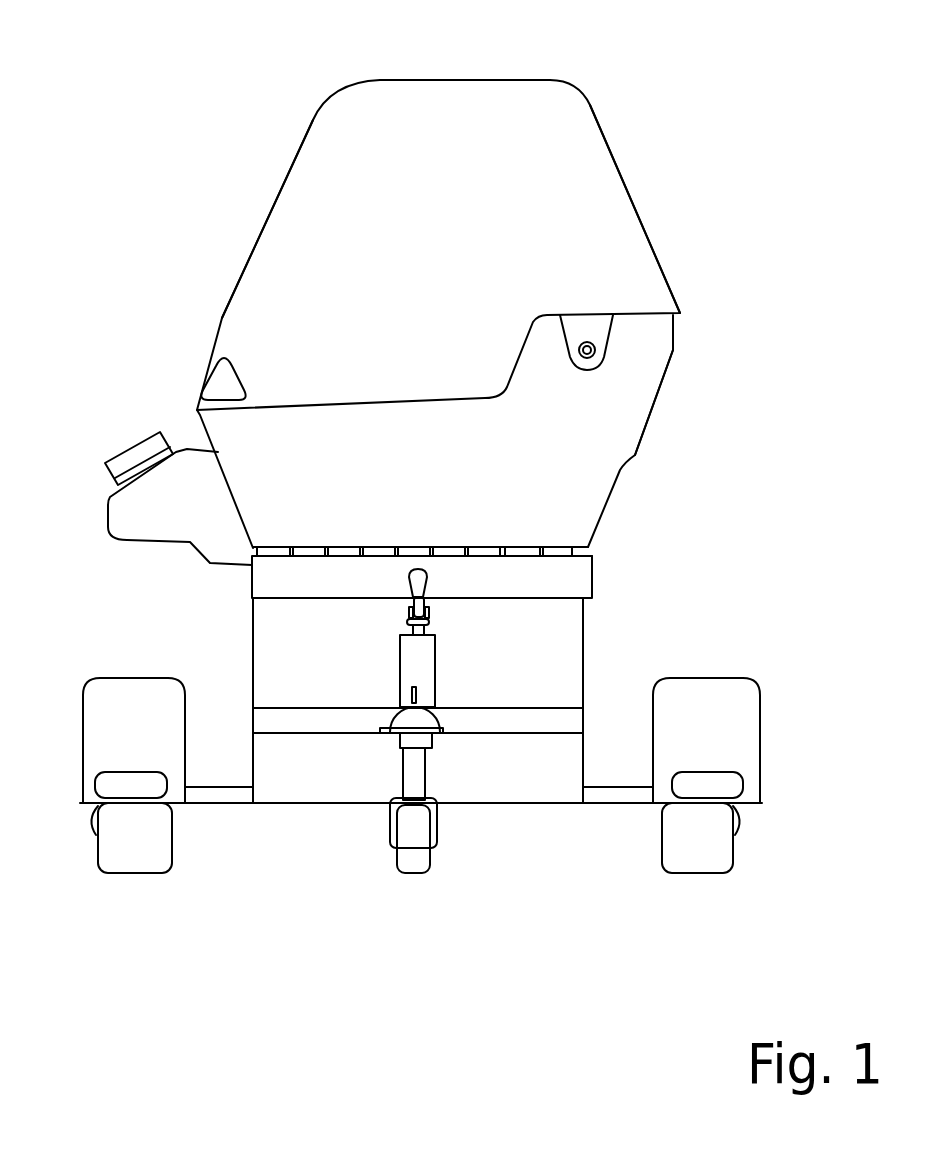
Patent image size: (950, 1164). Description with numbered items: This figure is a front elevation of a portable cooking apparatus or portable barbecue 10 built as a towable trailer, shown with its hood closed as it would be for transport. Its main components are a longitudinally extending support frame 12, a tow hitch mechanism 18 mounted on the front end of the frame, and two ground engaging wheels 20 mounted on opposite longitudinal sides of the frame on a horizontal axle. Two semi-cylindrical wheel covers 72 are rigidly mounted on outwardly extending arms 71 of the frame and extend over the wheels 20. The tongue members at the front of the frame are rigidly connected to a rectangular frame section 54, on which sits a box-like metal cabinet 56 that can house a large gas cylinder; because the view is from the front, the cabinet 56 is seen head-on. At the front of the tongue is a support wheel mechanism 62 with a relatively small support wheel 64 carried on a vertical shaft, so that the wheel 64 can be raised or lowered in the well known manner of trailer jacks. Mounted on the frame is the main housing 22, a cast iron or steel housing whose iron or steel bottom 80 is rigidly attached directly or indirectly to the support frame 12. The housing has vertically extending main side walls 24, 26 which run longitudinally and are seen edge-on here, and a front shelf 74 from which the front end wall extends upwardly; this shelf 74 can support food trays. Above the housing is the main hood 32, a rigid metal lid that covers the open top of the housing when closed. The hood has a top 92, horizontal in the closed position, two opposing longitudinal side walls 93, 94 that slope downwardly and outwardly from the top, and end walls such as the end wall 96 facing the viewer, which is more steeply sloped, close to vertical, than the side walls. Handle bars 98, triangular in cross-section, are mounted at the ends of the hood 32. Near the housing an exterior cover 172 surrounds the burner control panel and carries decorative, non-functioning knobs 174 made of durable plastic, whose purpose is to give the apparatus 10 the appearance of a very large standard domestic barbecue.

The portable barbecue 10 is at (660, 203).
The support frame 12 is at (583, 662).
The tow hitch mechanism 18 is at (417, 717).
The ground engaging wheels 20 is at (110, 840).
The main housing 22 is at (623, 400).
The main side wall 24 is at (230, 488).
The main side wall 26 is at (635, 455).
The main hood 32 is at (292, 203).
The rectangular frame section 54 is at (583, 722).
The cabinet 56 is at (252, 640).
The support wheel mechanism 62 is at (415, 790).
The support wheel 64 is at (422, 858).
The outwardly extending arms 71 is at (242, 797).
The wheel covers 72 is at (150, 744).
The front shelf 74 is at (575, 578).
The bottom 80 is at (590, 553).
The top 92 is at (446, 80).
The longitudinal side wall 93 is at (233, 282).
The longitudinal side wall 94 is at (673, 280).
The end wall 96 is at (461, 249).
The handle bars 98 is at (217, 390).
The exterior cover 172 is at (108, 524).
The decorative knobs 174 is at (133, 452).